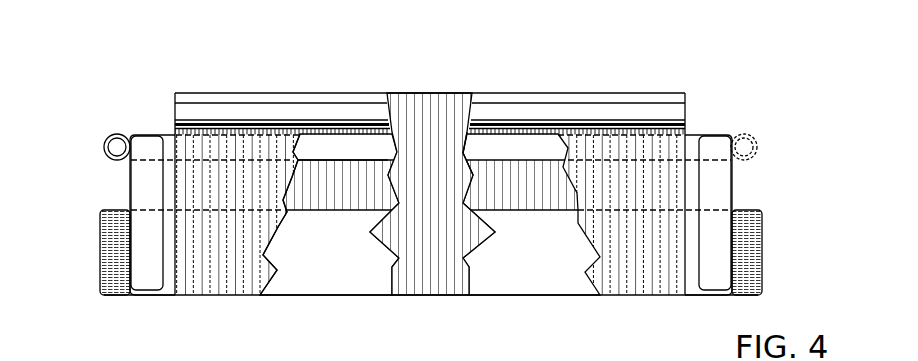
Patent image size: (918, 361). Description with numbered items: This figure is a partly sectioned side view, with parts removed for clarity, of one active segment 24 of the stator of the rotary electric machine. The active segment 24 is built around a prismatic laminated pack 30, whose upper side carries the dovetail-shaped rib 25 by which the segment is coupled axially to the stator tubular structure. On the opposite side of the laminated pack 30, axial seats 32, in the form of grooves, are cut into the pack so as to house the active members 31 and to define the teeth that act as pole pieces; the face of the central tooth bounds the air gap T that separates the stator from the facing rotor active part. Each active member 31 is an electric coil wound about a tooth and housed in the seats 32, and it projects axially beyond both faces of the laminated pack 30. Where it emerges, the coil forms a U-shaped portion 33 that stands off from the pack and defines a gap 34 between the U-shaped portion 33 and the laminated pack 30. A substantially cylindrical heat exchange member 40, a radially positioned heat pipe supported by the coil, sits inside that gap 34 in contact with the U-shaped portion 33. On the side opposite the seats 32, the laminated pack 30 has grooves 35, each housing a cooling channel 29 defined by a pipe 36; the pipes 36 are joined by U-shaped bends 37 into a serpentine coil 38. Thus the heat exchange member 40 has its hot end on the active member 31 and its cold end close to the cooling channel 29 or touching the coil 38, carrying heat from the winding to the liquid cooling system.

The active segment 24 is at (722, 90).
The dovetail-shaped rib 25 is at (555, 112).
The cooling channel 29 is at (694, 128).
The laminated pack 30 is at (645, 278).
The active member 31 is at (510, 272).
The axial seat 32 is at (330, 215).
The U-shaped portion 33 is at (88, 255).
The gap 34 is at (169, 212).
The groove 35 is at (478, 153).
The pipe 36 is at (368, 140).
The U-shaped bend 37 is at (110, 143).
The coil 38 is at (136, 118).
The heat exchange member 40 is at (140, 168).
The air gap T is at (278, 302).